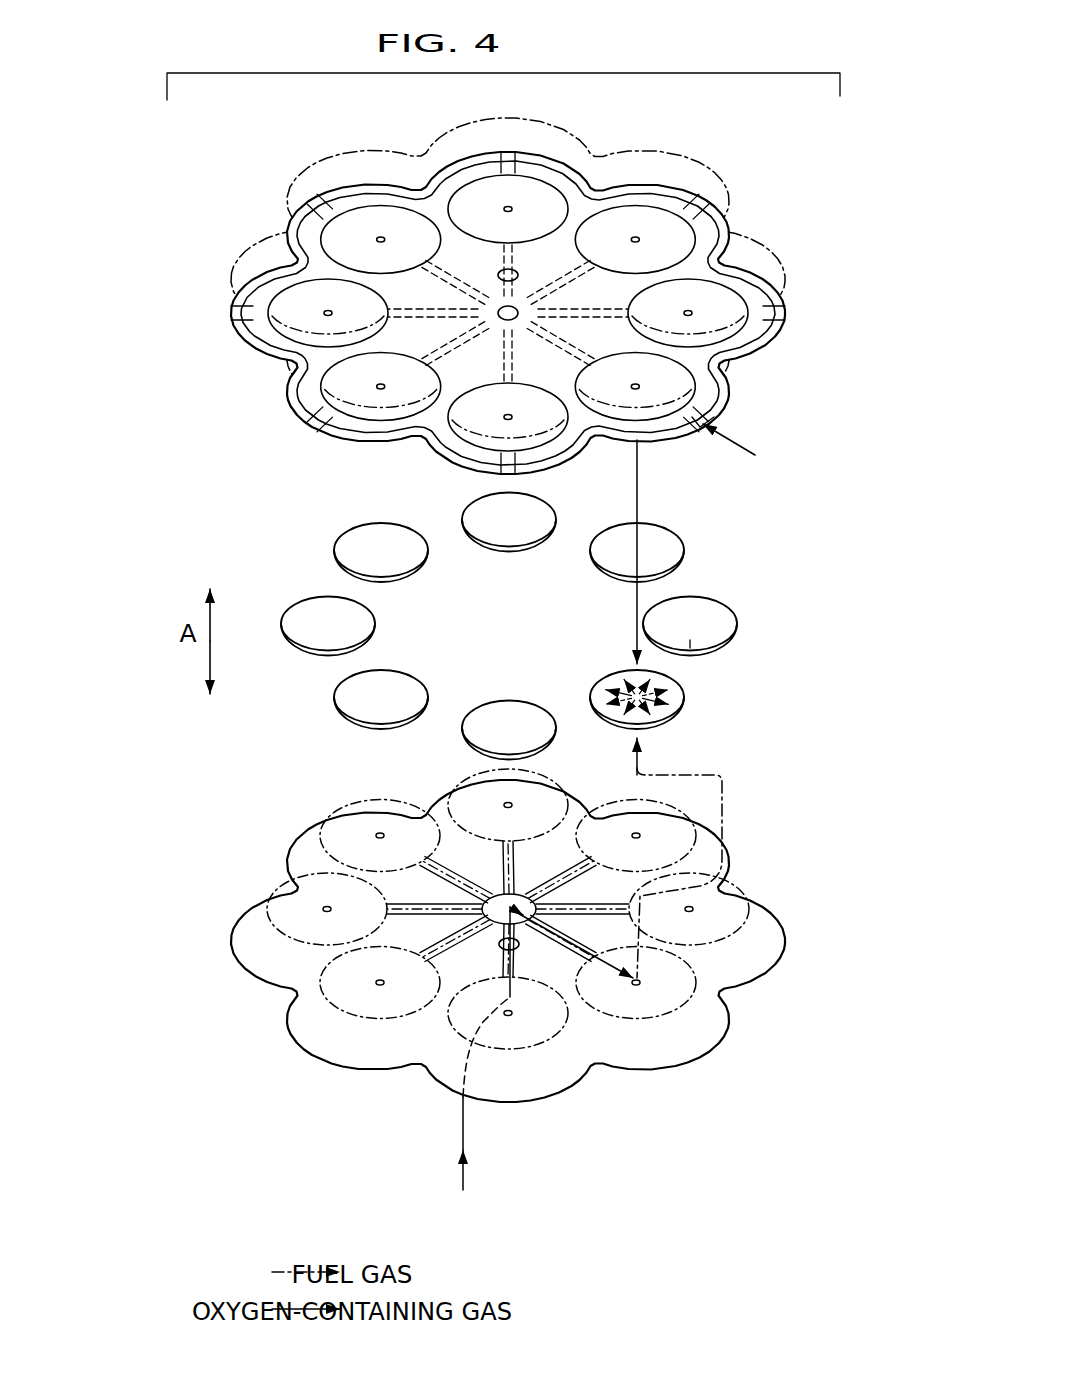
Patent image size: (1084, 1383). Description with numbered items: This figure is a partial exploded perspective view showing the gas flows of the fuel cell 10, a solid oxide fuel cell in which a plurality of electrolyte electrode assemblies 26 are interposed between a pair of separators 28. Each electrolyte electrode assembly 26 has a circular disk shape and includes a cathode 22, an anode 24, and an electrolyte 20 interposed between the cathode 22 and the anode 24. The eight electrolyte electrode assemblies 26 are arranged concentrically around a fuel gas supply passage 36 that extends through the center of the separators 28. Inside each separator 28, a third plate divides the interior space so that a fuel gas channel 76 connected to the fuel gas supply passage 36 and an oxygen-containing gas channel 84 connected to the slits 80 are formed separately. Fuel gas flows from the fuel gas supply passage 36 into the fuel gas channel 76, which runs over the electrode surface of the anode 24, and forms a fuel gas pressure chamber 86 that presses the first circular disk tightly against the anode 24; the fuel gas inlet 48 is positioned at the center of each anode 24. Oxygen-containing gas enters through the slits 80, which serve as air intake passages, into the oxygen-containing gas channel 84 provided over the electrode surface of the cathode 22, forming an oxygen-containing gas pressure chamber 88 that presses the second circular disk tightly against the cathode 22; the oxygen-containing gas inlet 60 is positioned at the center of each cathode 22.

The fuel cell 10 is at (229, 475).
The electrolyte 20 is at (713, 632).
The cathode 22 is at (720, 618).
The anode 24 is at (712, 662).
The electrolyte electrode assembly 26 is at (726, 683).
The separator 28 is at (538, 654).
The fuel gas supply passage 36 is at (497, 942).
The fuel gas inlet 48 is at (640, 986).
The oxygen-containing gas inlet 60 is at (634, 385).
The fuel gas channel 76 is at (596, 942).
The slits 80 is at (702, 421).
The oxygen-containing gas channel 84 is at (693, 424).
The fuel gas pressure chamber 86 is at (603, 995).
The oxygen-containing gas pressure chamber 88 is at (623, 432).